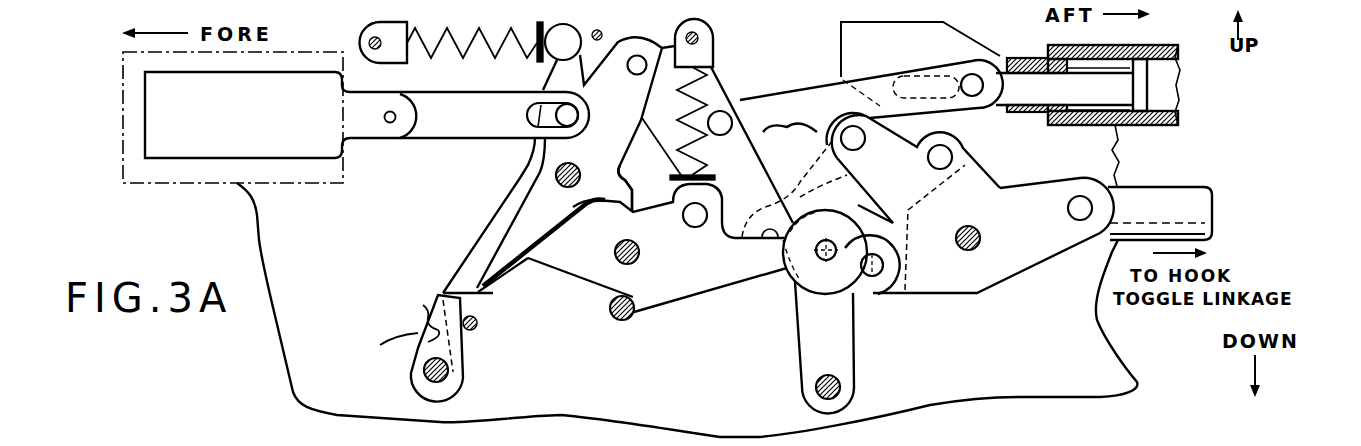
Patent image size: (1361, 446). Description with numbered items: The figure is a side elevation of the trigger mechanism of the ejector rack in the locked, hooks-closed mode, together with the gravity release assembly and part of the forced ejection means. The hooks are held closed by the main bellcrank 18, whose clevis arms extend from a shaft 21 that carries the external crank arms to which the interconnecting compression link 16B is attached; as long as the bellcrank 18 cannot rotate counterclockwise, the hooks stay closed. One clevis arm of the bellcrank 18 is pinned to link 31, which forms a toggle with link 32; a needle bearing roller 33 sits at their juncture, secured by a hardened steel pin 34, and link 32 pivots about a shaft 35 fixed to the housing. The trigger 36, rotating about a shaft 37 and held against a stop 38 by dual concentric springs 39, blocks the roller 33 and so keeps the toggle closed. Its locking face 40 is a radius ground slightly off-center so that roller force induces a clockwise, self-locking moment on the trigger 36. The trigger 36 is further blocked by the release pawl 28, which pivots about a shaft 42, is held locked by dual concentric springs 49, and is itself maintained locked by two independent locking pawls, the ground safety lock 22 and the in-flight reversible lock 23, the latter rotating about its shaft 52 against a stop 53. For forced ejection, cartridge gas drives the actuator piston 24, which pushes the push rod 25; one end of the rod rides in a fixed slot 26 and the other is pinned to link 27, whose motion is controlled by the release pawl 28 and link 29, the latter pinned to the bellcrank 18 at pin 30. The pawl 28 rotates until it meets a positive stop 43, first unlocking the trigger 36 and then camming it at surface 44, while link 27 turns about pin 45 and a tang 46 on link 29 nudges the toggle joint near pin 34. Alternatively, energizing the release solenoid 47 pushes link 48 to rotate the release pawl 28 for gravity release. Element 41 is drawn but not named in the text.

The interconnecting compression link 16B is at (1168, 187).
The main bellcrank 18 is at (1020, 278).
The shaft 21 is at (968, 252).
The ground safety lock 22 is at (405, 335).
The in-flight reversible lock 23 is at (468, 380).
The actuator piston 24 is at (1107, 53).
The push rod 25 is at (785, 90).
The fixed slot 26 is at (925, 72).
The link 27 is at (722, 80).
The release pawl 28 is at (515, 185).
The link 29 is at (805, 190).
The pin 30 is at (943, 157).
The link 31 is at (792, 196).
The link 32 is at (800, 367).
The roller 33 is at (818, 290).
The pin 34 is at (828, 270).
The shaft 35 is at (822, 395).
The trigger 36 is at (698, 300).
The shaft 37 is at (615, 263).
The stop 38 is at (627, 320).
The dual concentric springs 39 is at (712, 146).
The locking face 40 is at (784, 260).
The stop 41 is at (660, 176).
The shaft 42 is at (556, 186).
The positive stop 43 is at (602, 34).
The surface 44 is at (525, 260).
The pin 45 is at (637, 75).
The tang 46 is at (875, 292).
The release solenoid 47 is at (200, 134).
The link 48 is at (413, 140).
The dual concentric springs 49 is at (432, 62).
The shaft 52 is at (424, 378).
The stop 53 is at (478, 330).